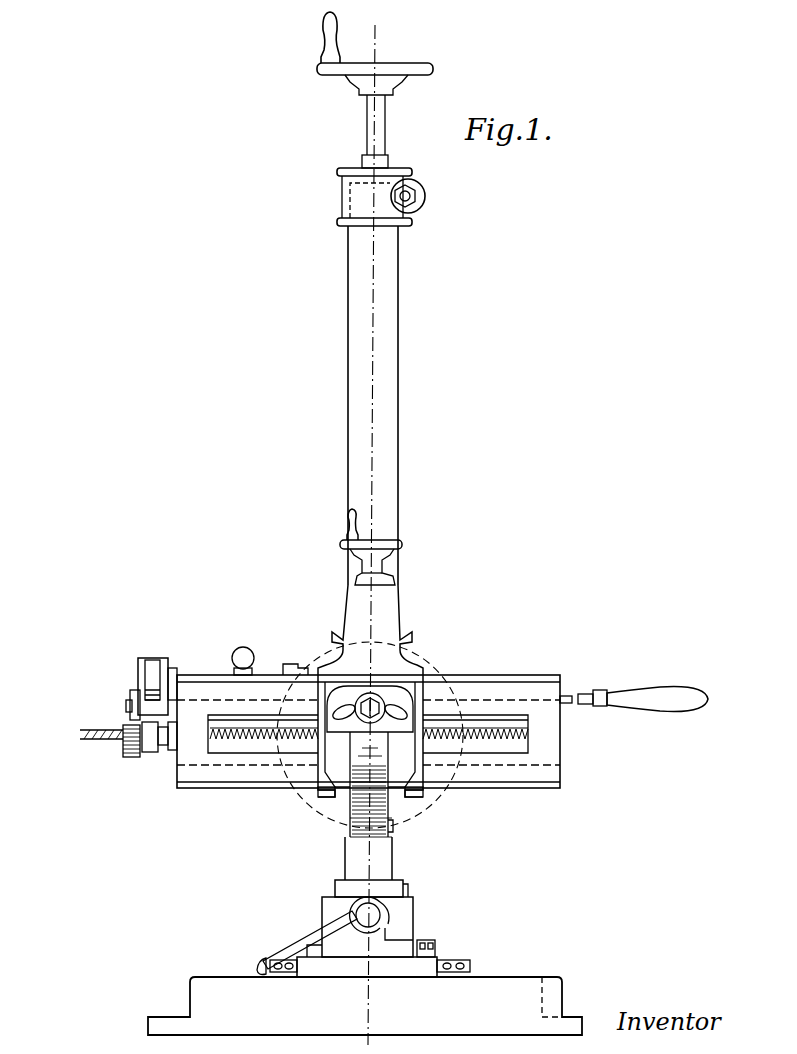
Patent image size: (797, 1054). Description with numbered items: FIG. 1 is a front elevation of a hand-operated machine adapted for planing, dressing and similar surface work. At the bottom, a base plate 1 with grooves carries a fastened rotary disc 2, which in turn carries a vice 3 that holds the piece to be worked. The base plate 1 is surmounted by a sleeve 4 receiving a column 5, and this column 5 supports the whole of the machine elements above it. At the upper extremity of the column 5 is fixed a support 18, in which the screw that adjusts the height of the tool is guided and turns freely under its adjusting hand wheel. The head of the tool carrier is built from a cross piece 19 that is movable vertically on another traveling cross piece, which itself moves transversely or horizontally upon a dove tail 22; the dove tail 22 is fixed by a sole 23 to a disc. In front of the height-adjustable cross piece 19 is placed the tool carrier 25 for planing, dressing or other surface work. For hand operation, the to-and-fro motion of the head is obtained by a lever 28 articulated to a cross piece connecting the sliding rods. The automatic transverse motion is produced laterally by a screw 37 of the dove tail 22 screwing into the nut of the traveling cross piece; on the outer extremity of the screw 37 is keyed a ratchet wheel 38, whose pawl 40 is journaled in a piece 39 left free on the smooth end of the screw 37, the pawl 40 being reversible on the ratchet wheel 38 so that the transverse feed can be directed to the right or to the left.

The base plate 1 is at (478, 991).
The rotary disc 2 is at (420, 963).
The vice 3 is at (322, 910).
The sleeve 4 is at (395, 889).
The column 5 is at (392, 378).
The support 18 is at (347, 182).
The cross piece 19 is at (410, 690).
The dove tail 22 is at (505, 696).
The sole 23 is at (314, 790).
The tool carrier 25 is at (405, 798).
The lever 28 is at (583, 693).
The screw 37 is at (222, 736).
The ratchet wheel 38 is at (130, 750).
The piece 39 is at (150, 668).
The pawl 40 is at (133, 706).